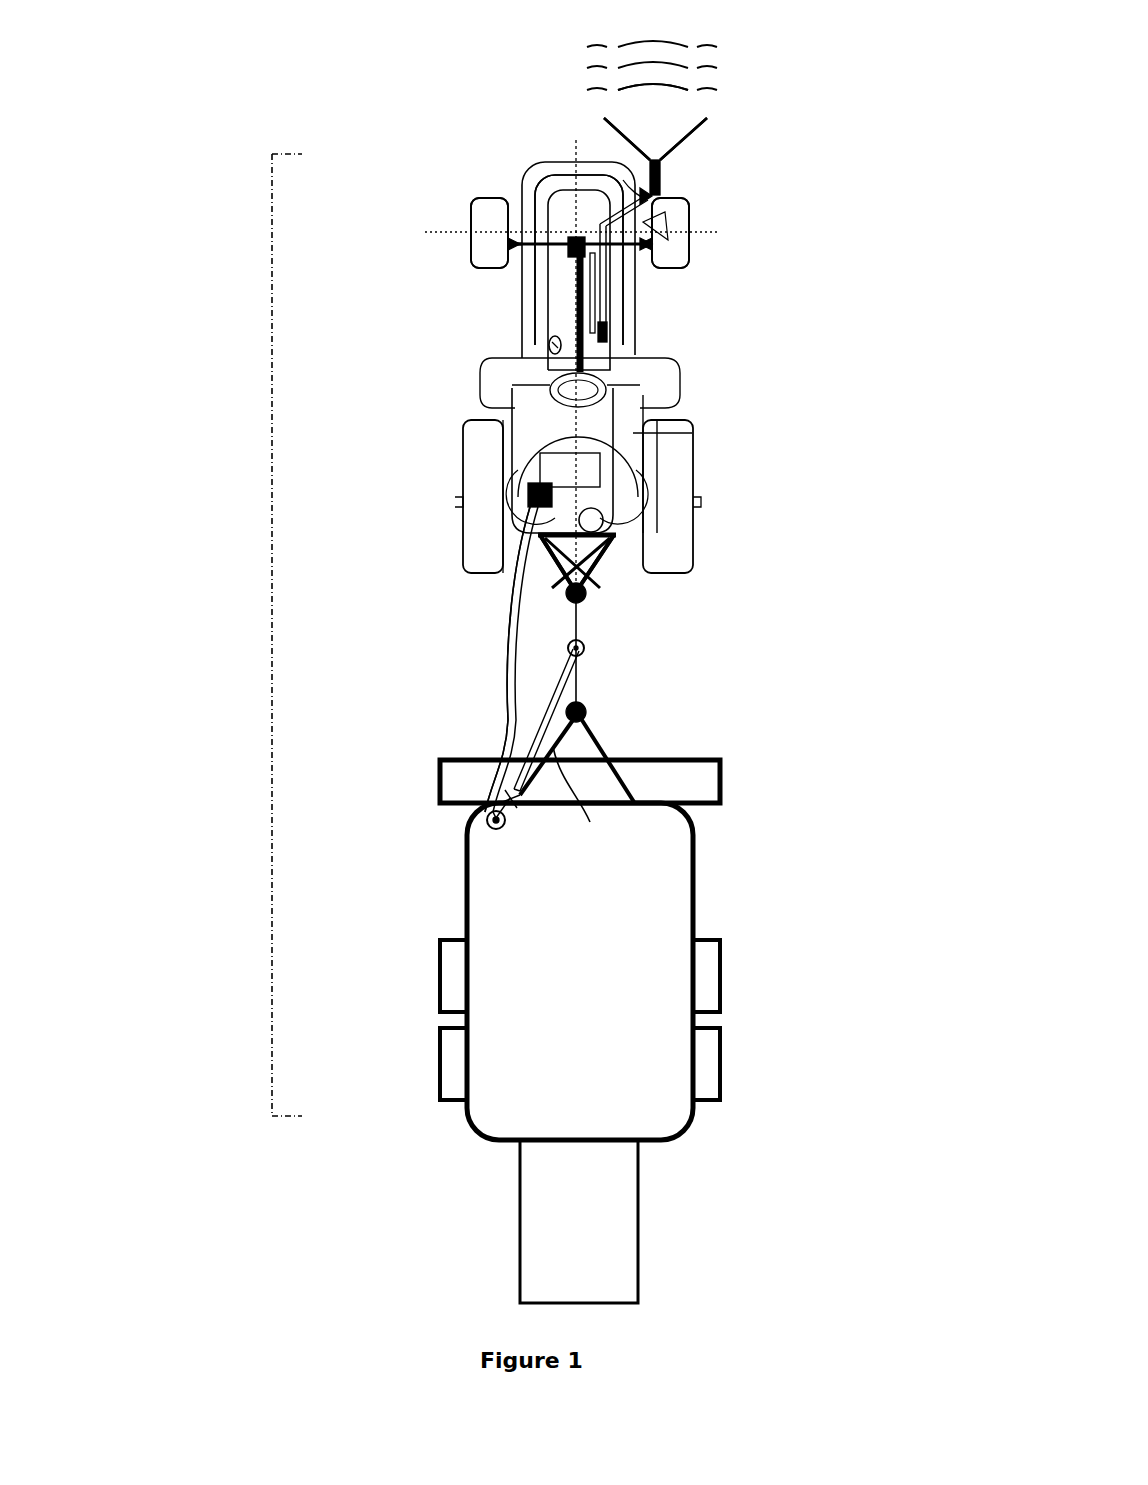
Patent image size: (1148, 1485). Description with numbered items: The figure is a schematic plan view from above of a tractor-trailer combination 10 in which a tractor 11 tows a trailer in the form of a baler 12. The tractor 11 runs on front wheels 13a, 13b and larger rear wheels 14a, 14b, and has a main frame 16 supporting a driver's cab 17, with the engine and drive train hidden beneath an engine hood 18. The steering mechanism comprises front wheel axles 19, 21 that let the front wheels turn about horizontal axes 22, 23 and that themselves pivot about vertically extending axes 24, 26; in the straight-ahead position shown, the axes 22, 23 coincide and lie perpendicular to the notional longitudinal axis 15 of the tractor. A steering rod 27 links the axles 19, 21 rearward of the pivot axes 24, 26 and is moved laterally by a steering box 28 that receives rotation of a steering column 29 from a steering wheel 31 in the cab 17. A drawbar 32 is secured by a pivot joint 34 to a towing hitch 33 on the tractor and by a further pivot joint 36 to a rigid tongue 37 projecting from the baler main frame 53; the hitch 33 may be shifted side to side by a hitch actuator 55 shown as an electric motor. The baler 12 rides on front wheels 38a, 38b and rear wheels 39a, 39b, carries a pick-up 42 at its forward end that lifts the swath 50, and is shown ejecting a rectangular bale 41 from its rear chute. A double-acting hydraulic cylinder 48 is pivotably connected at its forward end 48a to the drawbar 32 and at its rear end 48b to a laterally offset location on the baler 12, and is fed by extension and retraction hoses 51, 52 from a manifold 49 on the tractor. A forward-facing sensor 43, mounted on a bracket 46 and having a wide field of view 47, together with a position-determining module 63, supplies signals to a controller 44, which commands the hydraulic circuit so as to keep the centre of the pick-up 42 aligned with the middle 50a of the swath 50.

The tractor-trailer combination 10 is at (270, 618).
The tractor 11 is at (557, 312).
The baler 12 is at (492, 1110).
The front wheel 13a is at (488, 244).
The front wheel 13b is at (690, 245).
The rear wheel 14a is at (480, 553).
The rear wheel 14b is at (680, 548).
The longitudinal axis 15 is at (556, 563).
The main frame 16 is at (633, 373).
The driver's cab 17 is at (633, 437).
The engine hood 18 is at (567, 200).
The front wheel axle 19 is at (520, 227).
The front wheel axle 21 is at (645, 232).
The horizontal axis 22 is at (433, 233).
The horizontal axis 23 is at (715, 226).
The vertically extending axis 24 is at (517, 231).
The vertically extending axis 26 is at (657, 247).
The steering rod 27 is at (630, 265).
The steering box 28 is at (577, 232).
The steering column 29 is at (580, 295).
The steering wheel 31 is at (548, 380).
The drawbar 32 is at (582, 672).
The towing hitch 33 is at (612, 545).
The pivot joint 34 is at (587, 593).
The pivot joint 36 is at (590, 712).
The rigid tongue 37 is at (590, 822).
The front wheel of baler 38a is at (452, 960).
The front wheel of baler 38b is at (720, 968).
The rear wheel of baler 39a is at (450, 1045).
The rear wheel of baler 39b is at (708, 1062).
The rectangular bale 41 is at (552, 1215).
The pick-up 42 is at (700, 780).
The sensor 43 is at (662, 190).
The controller 44 is at (607, 332).
The bracket 46 is at (645, 188).
The field of view 47 is at (661, 168).
The double-acting hydraulic cylinder 48 is at (518, 800).
The forward end of cylinder 48a is at (585, 648).
The rear end of cylinder 48b is at (495, 830).
The manifold 49 is at (548, 495).
The swath 50 is at (735, 66).
The middle of the swath 50a is at (650, 90).
The extension hydraulic supply hose 51 is at (510, 688).
The retraction hydraulic supply hose 52 is at (508, 710).
The main frame of baler 53 is at (482, 815).
The hitch actuator 55 is at (600, 515).
The position-determining module 63 is at (549, 347).